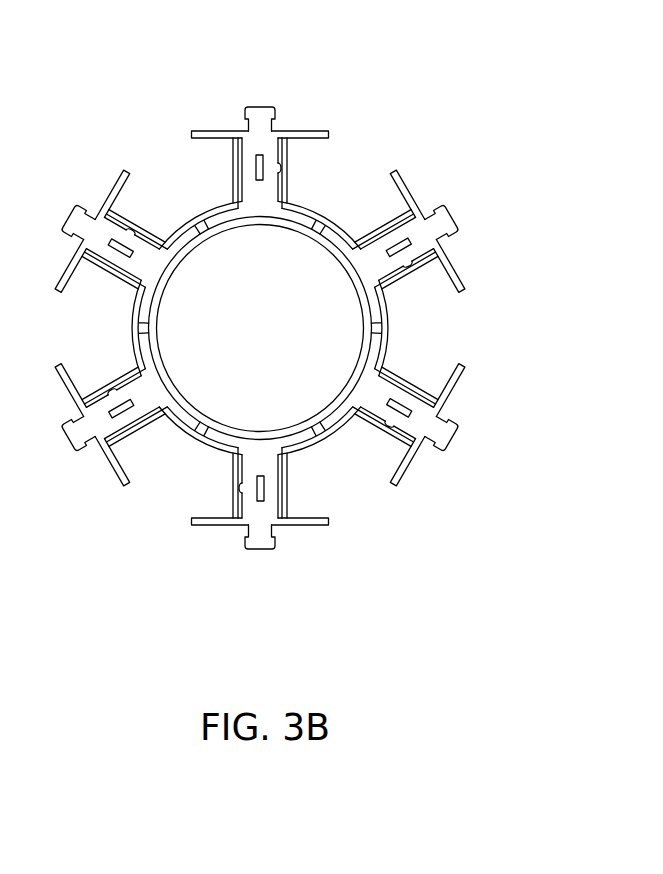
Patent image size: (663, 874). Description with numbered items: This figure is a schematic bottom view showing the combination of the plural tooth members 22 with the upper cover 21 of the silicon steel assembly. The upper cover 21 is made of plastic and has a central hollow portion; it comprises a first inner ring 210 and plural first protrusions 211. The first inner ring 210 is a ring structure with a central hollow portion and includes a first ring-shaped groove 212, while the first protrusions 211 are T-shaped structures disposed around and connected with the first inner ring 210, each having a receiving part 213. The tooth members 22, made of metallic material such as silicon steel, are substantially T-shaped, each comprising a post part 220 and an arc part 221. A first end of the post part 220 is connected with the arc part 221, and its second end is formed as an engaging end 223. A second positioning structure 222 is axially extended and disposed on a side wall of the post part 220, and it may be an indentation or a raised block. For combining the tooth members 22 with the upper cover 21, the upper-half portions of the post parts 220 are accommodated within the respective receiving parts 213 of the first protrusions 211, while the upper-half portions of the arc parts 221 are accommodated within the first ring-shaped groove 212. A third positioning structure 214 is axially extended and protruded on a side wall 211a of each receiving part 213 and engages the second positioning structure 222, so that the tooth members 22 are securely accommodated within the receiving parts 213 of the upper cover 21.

The upper cover 21 is at (440, 190).
The first inner ring 210 is at (320, 437).
The first protrusions 211 is at (379, 432).
The side wall of the receiving part 211a is at (400, 428).
The first ring-shaped groove 212 is at (343, 247).
The receiving parts 213 is at (400, 382).
The third positioning structure 214 is at (405, 259).
The tooth members 22 is at (256, 97).
The post part 220 is at (400, 399).
The arc part 221 is at (353, 238).
The second positioning structure 222 is at (418, 220).
The engaging end 223 is at (412, 257).